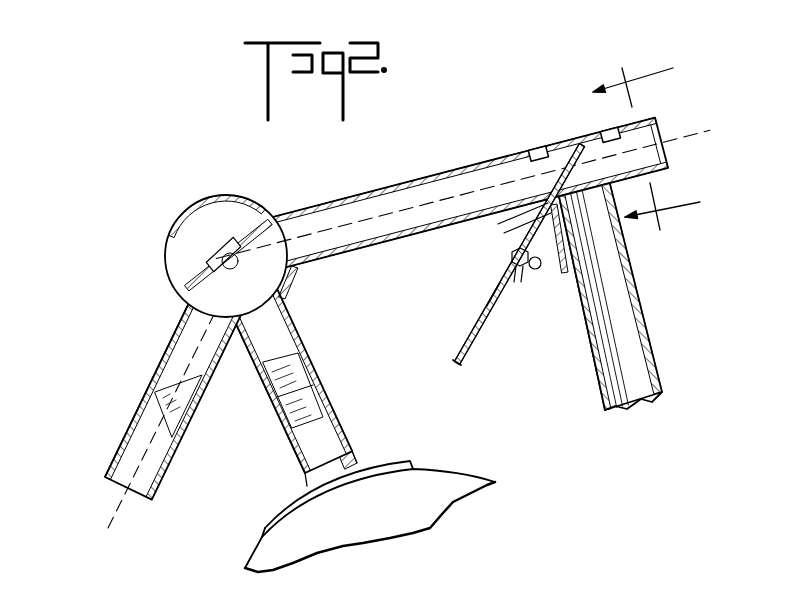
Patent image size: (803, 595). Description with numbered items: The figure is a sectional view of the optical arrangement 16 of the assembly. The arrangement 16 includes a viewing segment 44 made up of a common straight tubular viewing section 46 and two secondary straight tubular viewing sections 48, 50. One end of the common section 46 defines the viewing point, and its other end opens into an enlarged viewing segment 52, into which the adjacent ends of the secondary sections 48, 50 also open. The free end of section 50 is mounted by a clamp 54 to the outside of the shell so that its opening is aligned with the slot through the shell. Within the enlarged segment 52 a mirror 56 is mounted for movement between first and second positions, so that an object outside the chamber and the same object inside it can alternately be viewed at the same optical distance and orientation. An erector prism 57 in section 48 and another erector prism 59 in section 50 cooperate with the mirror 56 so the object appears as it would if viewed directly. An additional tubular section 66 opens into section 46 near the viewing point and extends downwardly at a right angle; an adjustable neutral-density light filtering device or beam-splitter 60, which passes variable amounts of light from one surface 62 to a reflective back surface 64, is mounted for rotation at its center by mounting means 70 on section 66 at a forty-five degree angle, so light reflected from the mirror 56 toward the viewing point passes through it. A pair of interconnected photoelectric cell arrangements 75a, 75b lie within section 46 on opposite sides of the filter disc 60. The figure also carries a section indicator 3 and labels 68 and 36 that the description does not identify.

The optical arrangement 16 is at (484, 105).
The viewing segment 44 is at (488, 138).
The common straight tubular viewing section 46 is at (441, 174).
The secondary straight tubular viewing section 48 is at (162, 351).
The secondary straight tubular viewing section 50 is at (334, 413).
The enlarged viewing segment 52 is at (212, 196).
The clamp 54 is at (272, 522).
The mirror 56 is at (198, 276).
The erector prism 57 is at (176, 406).
The erector prism 59 is at (295, 372).
The adjustable light filtering device 60 is at (457, 366).
The first surface 62 is at (488, 308).
The second surface 64 is at (487, 317).
The additional tubular section 66 is at (637, 289).
The clamp 68 is at (507, 242).
The mounting means 70 is at (560, 255).
The photoelectric cell arrangement 75a is at (537, 150).
The photoelectric cell arrangement 75b is at (657, 126).
The leg axis 36 is at (125, 498).
The section line for FIG. 3 is at (652, 145).